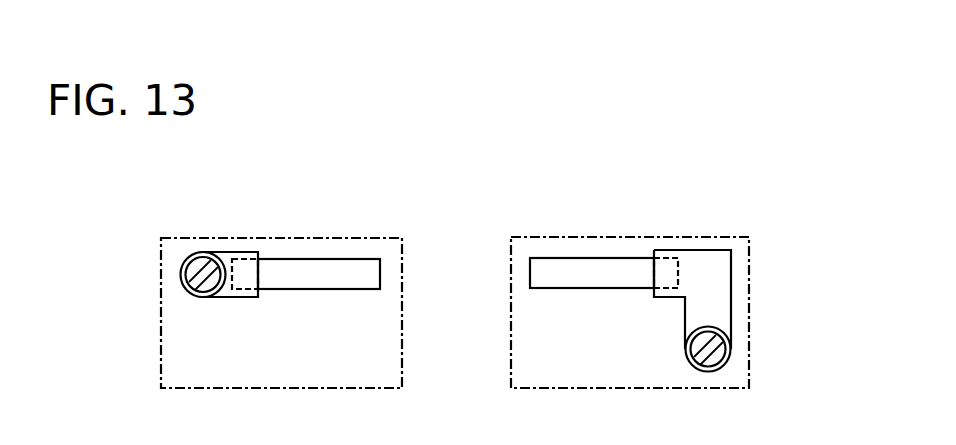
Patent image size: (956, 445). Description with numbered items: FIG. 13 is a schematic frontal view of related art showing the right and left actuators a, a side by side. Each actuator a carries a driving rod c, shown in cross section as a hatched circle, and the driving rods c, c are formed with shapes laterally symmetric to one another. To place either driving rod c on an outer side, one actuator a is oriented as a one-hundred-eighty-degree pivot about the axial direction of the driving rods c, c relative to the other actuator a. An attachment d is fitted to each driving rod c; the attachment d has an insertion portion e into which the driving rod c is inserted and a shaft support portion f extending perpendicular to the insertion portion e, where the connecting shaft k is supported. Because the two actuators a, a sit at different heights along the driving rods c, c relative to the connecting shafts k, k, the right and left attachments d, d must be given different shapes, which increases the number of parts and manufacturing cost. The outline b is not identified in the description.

The actuator a is at (160, 293).
The region boundary b is at (160, 372).
The driving rod c is at (202, 253).
The attachment d is at (225, 252).
The insertion portion e is at (188, 263).
The shaft support portion f is at (248, 258).
The connecting shaft k is at (322, 265).